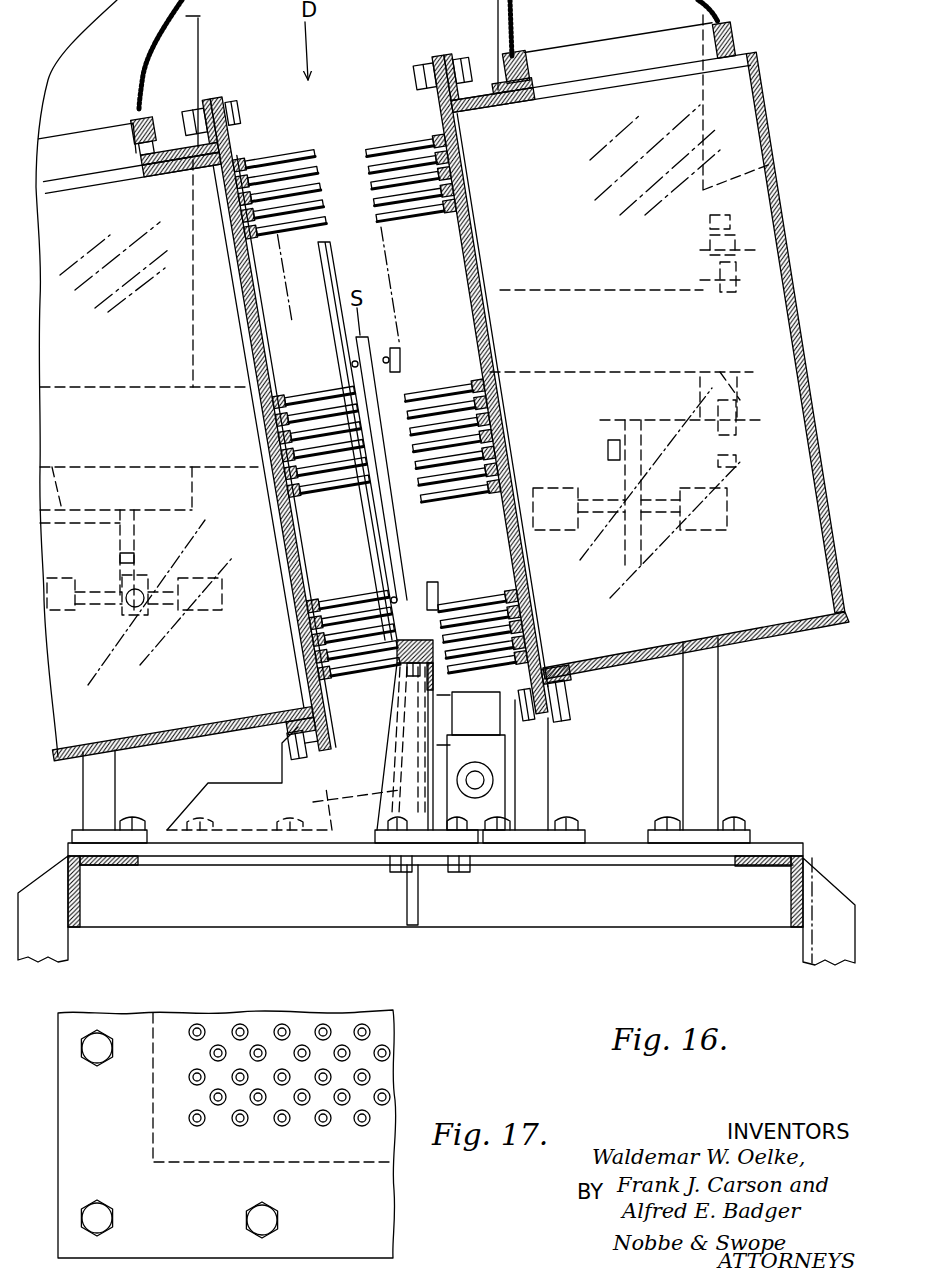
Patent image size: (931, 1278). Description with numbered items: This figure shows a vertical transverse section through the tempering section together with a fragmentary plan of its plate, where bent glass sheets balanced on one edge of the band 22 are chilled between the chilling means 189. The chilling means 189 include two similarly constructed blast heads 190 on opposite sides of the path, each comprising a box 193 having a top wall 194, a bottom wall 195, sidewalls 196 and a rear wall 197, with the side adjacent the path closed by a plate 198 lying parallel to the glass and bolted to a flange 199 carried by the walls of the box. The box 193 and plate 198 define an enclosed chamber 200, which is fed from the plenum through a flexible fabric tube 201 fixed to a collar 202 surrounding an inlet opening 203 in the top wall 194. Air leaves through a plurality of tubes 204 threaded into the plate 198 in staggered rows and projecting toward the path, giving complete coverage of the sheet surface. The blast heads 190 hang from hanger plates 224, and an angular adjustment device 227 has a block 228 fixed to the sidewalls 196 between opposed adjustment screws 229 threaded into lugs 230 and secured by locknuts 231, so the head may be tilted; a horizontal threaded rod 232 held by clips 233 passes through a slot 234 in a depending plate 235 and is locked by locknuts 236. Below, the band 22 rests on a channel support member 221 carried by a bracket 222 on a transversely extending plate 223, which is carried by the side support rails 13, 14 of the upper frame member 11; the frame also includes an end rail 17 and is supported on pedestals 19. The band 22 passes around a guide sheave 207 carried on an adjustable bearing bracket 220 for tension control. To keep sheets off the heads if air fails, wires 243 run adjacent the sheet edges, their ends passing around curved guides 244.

In FIG. 16, the upper frame member 11 is at (792, 912).
In FIG. 16, the side support rail 13 is at (790, 888).
In FIG. 16, the side support rail 14 is at (78, 883).
In FIG. 16, the end rail 17 is at (242, 900).
In FIG. 16, the pedestal 19 is at (48, 943).
In FIG. 16, the band 22 is at (440, 610).
In FIG. 16, the chilling means 189 is at (357, 107).
In FIG. 16, the blast head 190 is at (229, 96).
In FIG. 17, the blast head 190 is at (387, 1030).
In FIG. 16, the box 193 is at (723, 110).
In FIG. 16, the top wall 194 is at (160, 160).
In FIG. 16, the bottom wall 195 is at (207, 725).
In FIG. 16, the sidewall 196 is at (170, 443).
In FIG. 16, the rear wall 197 is at (763, 193).
In FIG. 16, the plate 198 is at (234, 150).
In FIG. 17, the plate 198 is at (355, 1190).
In FIG. 16, the flange 199 is at (200, 95).
In FIG. 16, the enclosed chamber 200 is at (720, 147).
In FIG. 17, the enclosed chamber 200 is at (337, 1133).
In FIG. 16, the flexible fabric tube 201 is at (160, 36).
In FIG. 16, the collar 202 is at (143, 120).
In FIG. 16, the inlet opening 203 is at (91, 176).
In FIG. 16, the tube 204 is at (305, 177).
In FIG. 17, the tube 204 is at (370, 1077).
In FIG. 16, the guide sheave 207 is at (283, 778).
In FIG. 16, the adjustable bearing bracket 220 is at (487, 753).
In FIG. 16, the channel support member 221 is at (400, 670).
In FIG. 16, the bracket 222 is at (392, 760).
In FIG. 16, the transversely extending plate 223 is at (318, 847).
In FIG. 16, the hanger plate 224 is at (193, 320).
In FIG. 16, the angular adjustment device 227 is at (753, 277).
In FIG. 16, the block 228 is at (218, 470).
In FIG. 16, the adjustment screw 229 is at (747, 220).
In FIG. 16, the lug 230 is at (767, 253).
In FIG. 16, the locknut 231 is at (743, 240).
In FIG. 16, the threaded rod 232 is at (176, 568).
In FIG. 16, the clip 233 is at (223, 618).
In FIG. 16, the slot 234 is at (122, 558).
In FIG. 16, the plate 235 is at (143, 672).
In FIG. 16, the locknut 236 is at (110, 632).
In FIG. 16, the wire 243 is at (393, 602).
In FIG. 16, the curved guide 244 is at (400, 362).